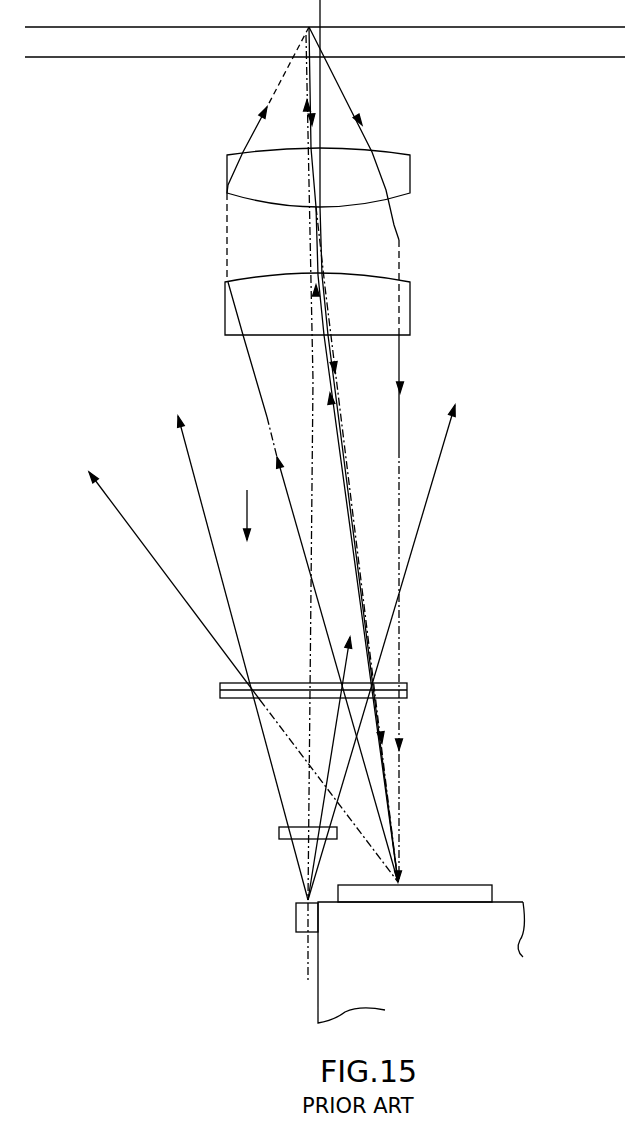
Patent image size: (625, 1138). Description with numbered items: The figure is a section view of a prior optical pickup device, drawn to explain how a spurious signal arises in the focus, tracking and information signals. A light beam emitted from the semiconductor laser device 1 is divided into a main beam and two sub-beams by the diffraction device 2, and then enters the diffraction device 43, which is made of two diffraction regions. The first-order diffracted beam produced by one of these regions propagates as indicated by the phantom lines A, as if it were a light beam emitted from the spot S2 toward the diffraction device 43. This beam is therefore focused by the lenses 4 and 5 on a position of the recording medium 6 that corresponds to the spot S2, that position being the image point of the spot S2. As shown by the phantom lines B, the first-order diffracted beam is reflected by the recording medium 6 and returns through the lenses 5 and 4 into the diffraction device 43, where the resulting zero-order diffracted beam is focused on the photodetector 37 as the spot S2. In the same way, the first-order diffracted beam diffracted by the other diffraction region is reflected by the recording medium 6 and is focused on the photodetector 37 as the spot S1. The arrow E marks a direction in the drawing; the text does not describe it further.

The recording medium 6 is at (124, 57).
The lens 5 is at (227, 175).
The lens 4 is at (225, 310).
The diffraction device 43 is at (220, 692).
The diffraction device 2 is at (279, 833).
The semiconductor laser device 1 is at (296, 917).
The photodetector 37 is at (487, 892).
The spot S1 is at (457, 883).
The spot S2 is at (400, 882).
The phantom lines A is at (358, 590).
The phantom lines B is at (403, 428).
The direction E is at (256, 515).